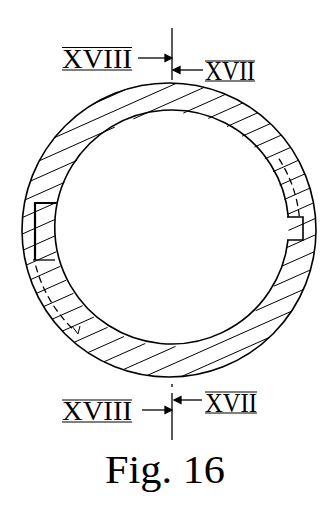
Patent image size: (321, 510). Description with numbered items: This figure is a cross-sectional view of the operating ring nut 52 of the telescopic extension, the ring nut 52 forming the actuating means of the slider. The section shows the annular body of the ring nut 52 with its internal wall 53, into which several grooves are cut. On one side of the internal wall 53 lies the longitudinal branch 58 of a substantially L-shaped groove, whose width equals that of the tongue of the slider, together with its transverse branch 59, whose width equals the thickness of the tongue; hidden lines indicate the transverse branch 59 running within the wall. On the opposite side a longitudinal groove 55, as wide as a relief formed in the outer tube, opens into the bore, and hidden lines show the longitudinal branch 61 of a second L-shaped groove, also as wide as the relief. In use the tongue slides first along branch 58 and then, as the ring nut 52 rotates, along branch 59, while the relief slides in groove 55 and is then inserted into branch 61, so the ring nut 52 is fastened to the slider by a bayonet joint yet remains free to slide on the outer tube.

The ring nut 52 is at (240, 112).
The internal wall 53 is at (164, 112).
The longitudinal groove 55 is at (300, 233).
The longitudinal branch 58 is at (44, 240).
The transverse branch 59 is at (77, 297).
The longitudinal branch 61 is at (278, 177).